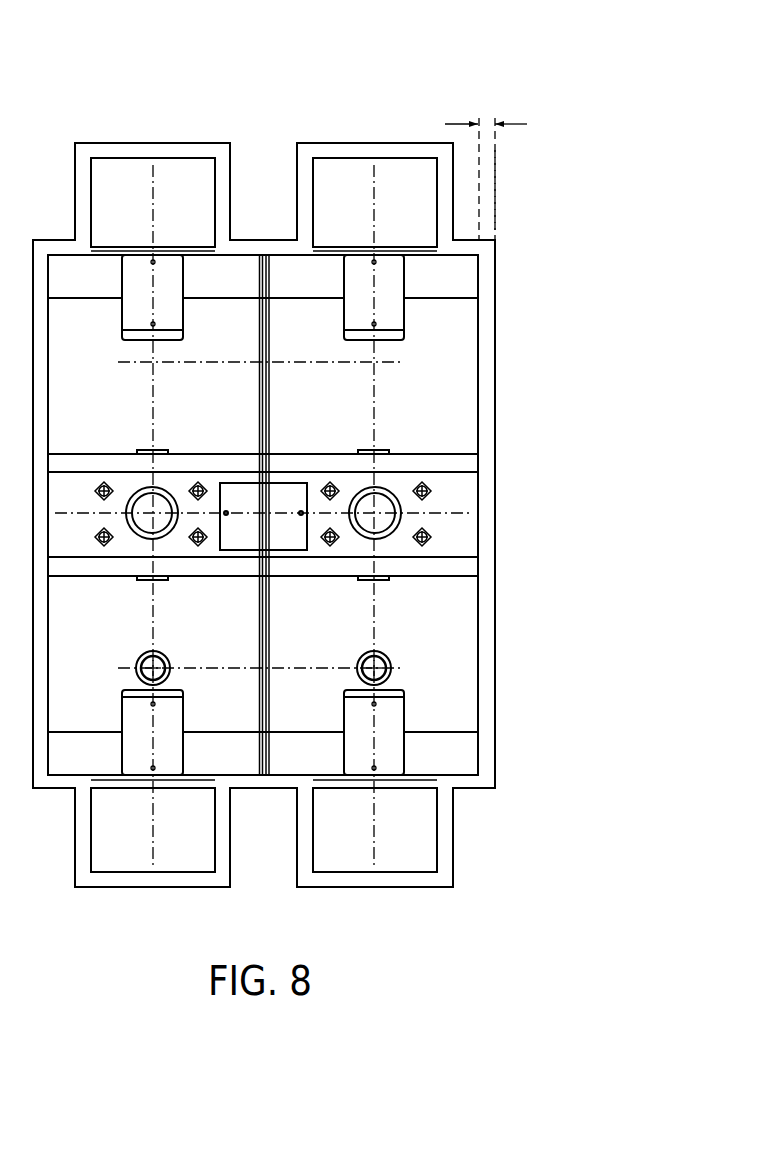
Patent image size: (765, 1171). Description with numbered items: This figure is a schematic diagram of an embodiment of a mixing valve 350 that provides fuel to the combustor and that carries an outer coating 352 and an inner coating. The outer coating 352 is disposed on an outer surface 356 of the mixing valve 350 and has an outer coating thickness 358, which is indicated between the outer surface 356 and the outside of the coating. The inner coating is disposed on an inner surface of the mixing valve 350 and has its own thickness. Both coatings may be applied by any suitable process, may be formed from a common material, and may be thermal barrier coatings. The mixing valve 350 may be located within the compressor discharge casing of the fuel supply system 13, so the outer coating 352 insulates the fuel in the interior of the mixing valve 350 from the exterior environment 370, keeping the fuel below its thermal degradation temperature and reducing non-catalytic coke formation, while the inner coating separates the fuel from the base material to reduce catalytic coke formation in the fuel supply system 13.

The fuel supply system 13 is at (557, 70).
The mixing valve 350 is at (418, 85).
The outer coating 352 is at (495, 285).
The outer surface 356 is at (478, 318).
The outer coating thickness 358 is at (508, 124).
The exterior environment 370 is at (563, 186).